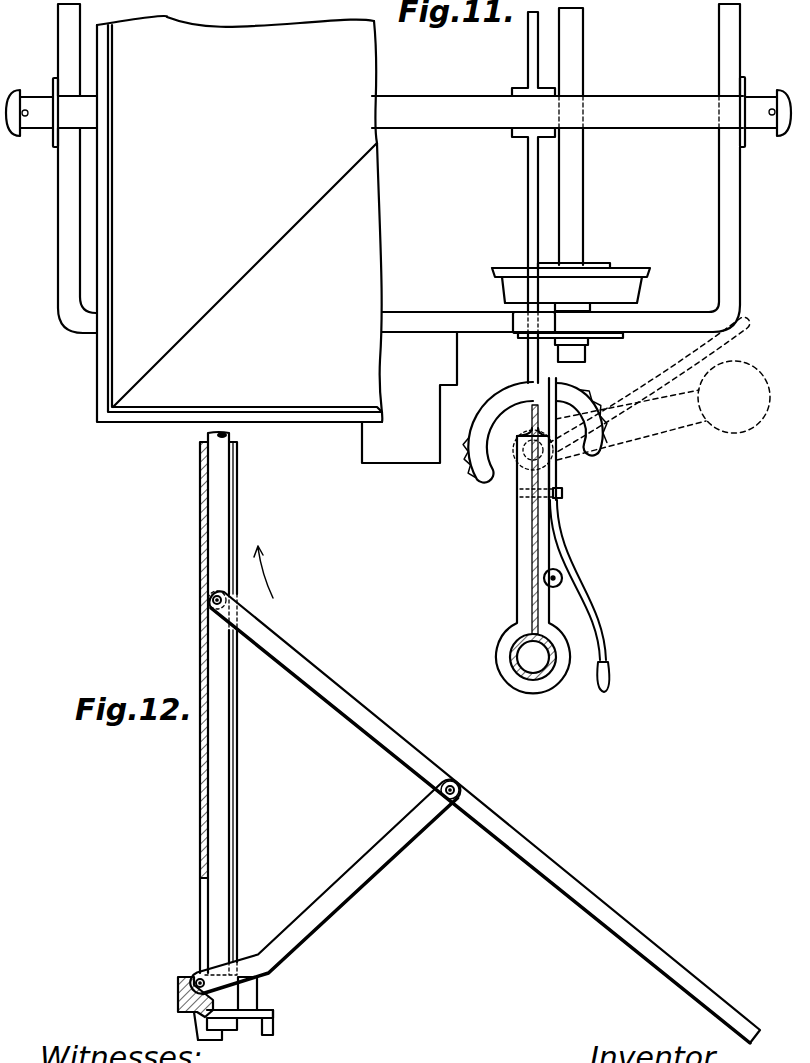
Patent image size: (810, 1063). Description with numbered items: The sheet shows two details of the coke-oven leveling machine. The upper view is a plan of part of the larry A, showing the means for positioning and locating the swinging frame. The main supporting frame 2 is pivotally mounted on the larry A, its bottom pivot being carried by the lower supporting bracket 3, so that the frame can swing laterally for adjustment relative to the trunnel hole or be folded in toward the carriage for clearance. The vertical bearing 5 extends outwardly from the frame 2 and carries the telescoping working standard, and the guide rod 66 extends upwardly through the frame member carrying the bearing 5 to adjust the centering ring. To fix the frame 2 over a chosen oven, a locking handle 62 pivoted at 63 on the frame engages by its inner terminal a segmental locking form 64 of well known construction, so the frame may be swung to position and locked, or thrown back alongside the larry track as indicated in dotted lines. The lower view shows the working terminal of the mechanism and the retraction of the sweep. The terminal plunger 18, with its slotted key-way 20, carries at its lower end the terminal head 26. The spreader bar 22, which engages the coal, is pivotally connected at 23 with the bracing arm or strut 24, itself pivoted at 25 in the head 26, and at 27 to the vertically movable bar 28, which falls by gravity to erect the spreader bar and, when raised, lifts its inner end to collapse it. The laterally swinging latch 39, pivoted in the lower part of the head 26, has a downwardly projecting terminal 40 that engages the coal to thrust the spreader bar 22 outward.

In FIG. 11, the larry A is at (239, 219).
In FIG. 11, the main supporting frame 2 is at (525, 549).
In FIG. 11, the lower supporting bracket 3 is at (534, 368).
In FIG. 11, the vertical bearing 5 is at (515, 667).
In FIG. 11, the locking handle 62 is at (678, 359).
In FIG. 11, the pivot 63 is at (563, 494).
In FIG. 11, the segmental locking form 64 is at (502, 397).
In FIG. 11, the guide rod 66 is at (558, 580).
In FIG. 12, the terminal plunger 18 is at (200, 770).
In FIG. 12, the slotted key-way 20 is at (236, 799).
In FIG. 12, the spreader bar 22 is at (565, 880).
In FIG. 12, the pivotal connection 23 is at (458, 783).
In FIG. 12, the bracing arm or strut 24 is at (348, 873).
In FIG. 12, the pivot 25 is at (197, 978).
In FIG. 12, the terminal head 26 is at (178, 990).
In FIG. 12, the pivot 27 is at (212, 606).
In FIG. 12, the vertically movable bar 28 is at (218, 490).
In FIG. 12, the laterally swinging latch 39 is at (243, 1014).
In FIG. 12, the downwardly projecting terminal 40 is at (275, 1028).